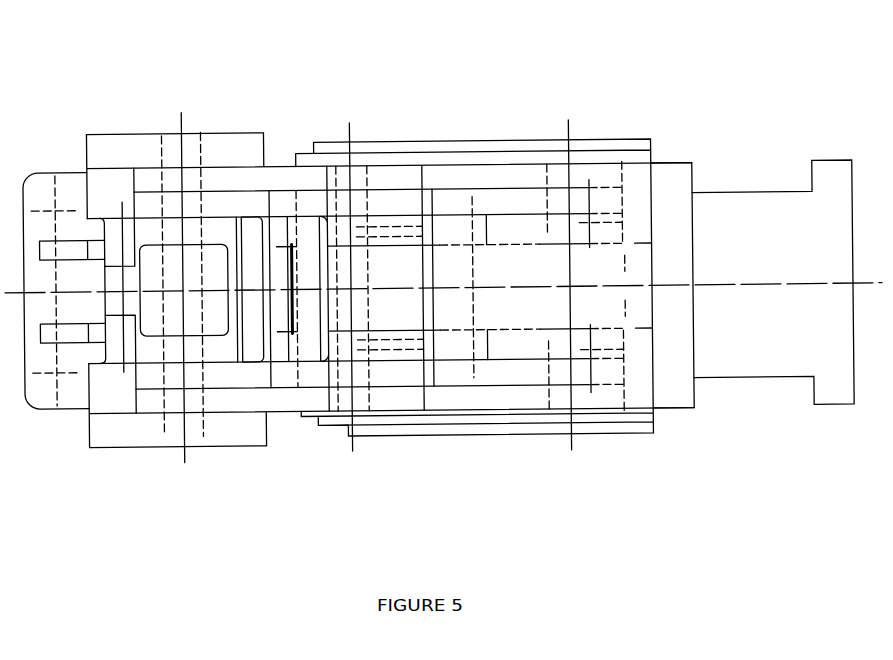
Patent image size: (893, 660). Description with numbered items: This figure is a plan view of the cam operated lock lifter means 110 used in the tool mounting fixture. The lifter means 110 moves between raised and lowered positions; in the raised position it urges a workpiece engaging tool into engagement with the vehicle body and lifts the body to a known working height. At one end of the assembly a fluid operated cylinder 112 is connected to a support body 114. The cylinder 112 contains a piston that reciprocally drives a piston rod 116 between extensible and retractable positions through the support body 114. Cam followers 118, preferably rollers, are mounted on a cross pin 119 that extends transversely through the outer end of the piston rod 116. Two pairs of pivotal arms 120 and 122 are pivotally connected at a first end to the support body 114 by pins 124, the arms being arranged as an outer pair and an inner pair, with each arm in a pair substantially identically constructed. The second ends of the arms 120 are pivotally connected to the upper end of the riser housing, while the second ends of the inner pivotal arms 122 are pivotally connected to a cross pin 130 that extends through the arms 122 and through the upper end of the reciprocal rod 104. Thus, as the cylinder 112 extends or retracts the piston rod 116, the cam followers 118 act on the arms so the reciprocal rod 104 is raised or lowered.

The reciprocal rod 104 is at (138, 304).
The cam operated lock lifter means 110 is at (454, 133).
The fluid operated cylinder 112 is at (756, 198).
The support body 114 is at (640, 143).
The piston rod 116 is at (507, 329).
The cam followers 118 is at (369, 199).
The cross pin 119 is at (368, 294).
The pivotal arms 120 is at (274, 176).
The pivotal arms 122 is at (303, 208).
The pins 124 is at (549, 176).
The cross pin 130 is at (160, 430).